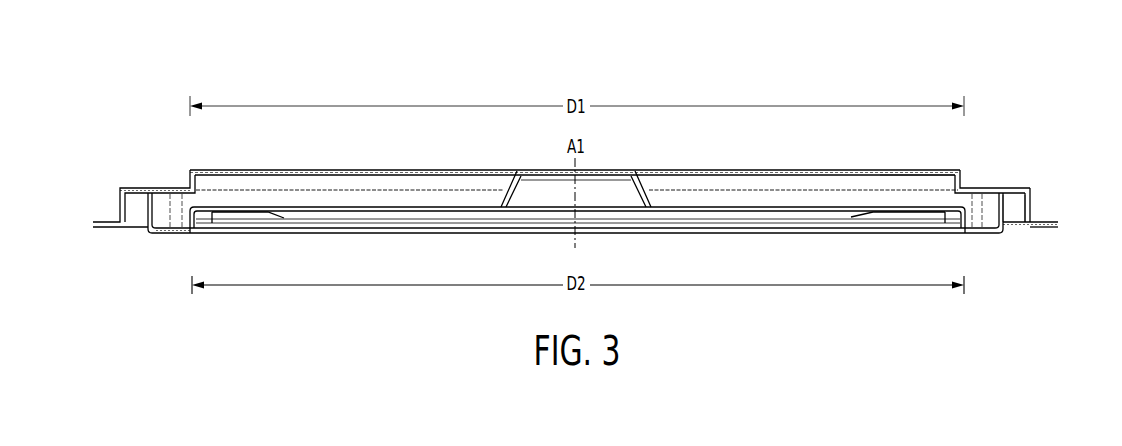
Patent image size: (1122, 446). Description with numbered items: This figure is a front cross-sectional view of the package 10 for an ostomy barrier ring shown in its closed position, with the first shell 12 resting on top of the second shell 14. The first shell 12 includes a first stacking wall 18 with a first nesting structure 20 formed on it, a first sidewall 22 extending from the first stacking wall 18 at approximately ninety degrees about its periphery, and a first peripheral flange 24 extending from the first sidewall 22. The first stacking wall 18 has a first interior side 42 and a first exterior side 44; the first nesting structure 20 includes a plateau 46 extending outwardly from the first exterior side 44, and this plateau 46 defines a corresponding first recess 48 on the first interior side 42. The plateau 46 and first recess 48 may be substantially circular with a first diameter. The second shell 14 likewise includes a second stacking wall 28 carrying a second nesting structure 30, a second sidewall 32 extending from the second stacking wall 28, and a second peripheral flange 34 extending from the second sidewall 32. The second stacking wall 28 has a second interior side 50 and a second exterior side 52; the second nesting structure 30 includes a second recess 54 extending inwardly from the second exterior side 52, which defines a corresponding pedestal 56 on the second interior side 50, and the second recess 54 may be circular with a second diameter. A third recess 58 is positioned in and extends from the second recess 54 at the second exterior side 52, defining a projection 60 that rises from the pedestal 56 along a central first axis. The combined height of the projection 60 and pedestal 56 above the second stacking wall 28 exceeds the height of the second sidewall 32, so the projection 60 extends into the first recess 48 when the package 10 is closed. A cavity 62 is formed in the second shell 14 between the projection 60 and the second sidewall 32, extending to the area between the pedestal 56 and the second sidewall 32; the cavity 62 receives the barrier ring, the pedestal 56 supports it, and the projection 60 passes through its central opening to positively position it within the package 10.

The package 10 is at (1050, 127).
The first shell 12 is at (152, 182).
The second shell 14 is at (151, 244).
The first stacking wall 18 is at (1012, 192).
The first nesting structure 20 is at (963, 182).
The first sidewall 22 is at (1026, 215).
The first peripheral flange 24 is at (1048, 220).
The second stacking wall 28 is at (980, 234).
The second nesting structure 30 is at (386, 213).
The second sidewall 32 is at (1014, 214).
The second peripheral flange 34 is at (1040, 229).
The first interior side 42 is at (181, 194).
The first exterior side 44 is at (163, 189).
The plateau 46 is at (652, 171).
The first recess 48 is at (902, 174).
The second interior side 50 is at (172, 223).
The second exterior side 52 is at (183, 234).
The second recess 54 is at (795, 214).
The pedestal 56 is at (819, 207).
The third recess 58 is at (508, 208).
The projection 60 is at (512, 185).
The cavity 62 is at (985, 213).